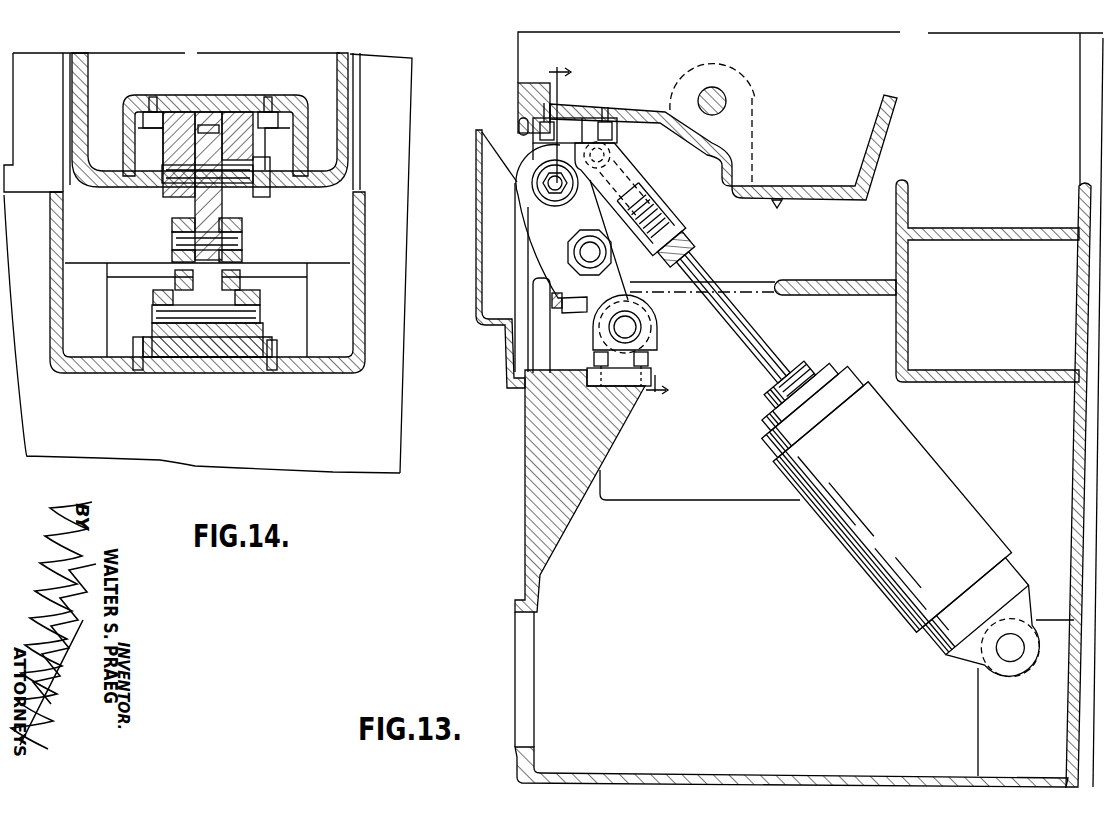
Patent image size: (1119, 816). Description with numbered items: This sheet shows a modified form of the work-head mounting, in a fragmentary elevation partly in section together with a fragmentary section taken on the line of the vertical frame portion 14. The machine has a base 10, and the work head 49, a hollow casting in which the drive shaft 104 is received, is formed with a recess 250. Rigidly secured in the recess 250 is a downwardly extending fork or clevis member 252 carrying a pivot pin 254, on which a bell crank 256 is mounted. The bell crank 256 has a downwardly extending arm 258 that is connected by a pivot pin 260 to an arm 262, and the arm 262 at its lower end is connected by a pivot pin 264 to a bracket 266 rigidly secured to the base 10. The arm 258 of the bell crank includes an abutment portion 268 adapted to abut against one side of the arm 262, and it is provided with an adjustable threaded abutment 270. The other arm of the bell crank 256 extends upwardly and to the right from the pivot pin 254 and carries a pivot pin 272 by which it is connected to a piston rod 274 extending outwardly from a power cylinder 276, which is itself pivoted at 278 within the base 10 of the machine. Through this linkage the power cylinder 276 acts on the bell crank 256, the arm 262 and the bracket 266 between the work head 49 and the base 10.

In FIG. 13, the base 10 is at (519, 549).
In FIG. 14, the base 10 is at (402, 442).
In FIG. 13, the vertical frame portion 14 is at (609, 233).
In FIG. 13, the work head 49 is at (518, 48).
In FIG. 14, the work head 49 is at (287, 62).
In FIG. 13, the drive shaft 104 is at (727, 102).
In FIG. 13, the recess 250 is at (734, 161).
In FIG. 13, the fork or clevis member 252 is at (613, 132).
In FIG. 14, the fork or clevis member 252 is at (250, 148).
In FIG. 13, the pivot pin 254 is at (543, 182).
In FIG. 14, the pivot pin 254 is at (185, 180).
In FIG. 13, the bell crank 256 is at (512, 162).
In FIG. 14, the bell crank 256 is at (233, 207).
In FIG. 13, the downwardly extending arm 258 is at (530, 224).
In FIG. 13, the pivot pin 260 is at (584, 254).
In FIG. 14, the pivot pin 260 is at (242, 242).
In FIG. 13, the arm 262 is at (673, 265).
In FIG. 13, the pivot pin 264 is at (642, 328).
In FIG. 14, the pivot pin 264 is at (262, 313).
In FIG. 13, the bracket 266 is at (650, 358).
In FIG. 14, the bracket 266 is at (157, 332).
In FIG. 13, the abutment portion 268 is at (554, 299).
In FIG. 13, the adjustable threaded abutment 270 is at (492, 327).
In FIG. 13, the pivot pin 272 is at (610, 152).
In FIG. 13, the piston rod 274 is at (758, 373).
In FIG. 13, the power cylinder 276 is at (940, 467).
In FIG. 13, the pivot 278 is at (996, 652).